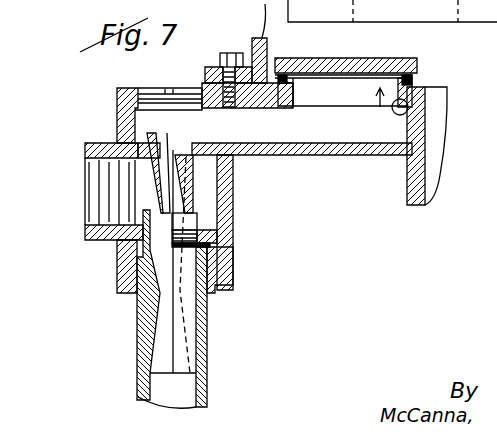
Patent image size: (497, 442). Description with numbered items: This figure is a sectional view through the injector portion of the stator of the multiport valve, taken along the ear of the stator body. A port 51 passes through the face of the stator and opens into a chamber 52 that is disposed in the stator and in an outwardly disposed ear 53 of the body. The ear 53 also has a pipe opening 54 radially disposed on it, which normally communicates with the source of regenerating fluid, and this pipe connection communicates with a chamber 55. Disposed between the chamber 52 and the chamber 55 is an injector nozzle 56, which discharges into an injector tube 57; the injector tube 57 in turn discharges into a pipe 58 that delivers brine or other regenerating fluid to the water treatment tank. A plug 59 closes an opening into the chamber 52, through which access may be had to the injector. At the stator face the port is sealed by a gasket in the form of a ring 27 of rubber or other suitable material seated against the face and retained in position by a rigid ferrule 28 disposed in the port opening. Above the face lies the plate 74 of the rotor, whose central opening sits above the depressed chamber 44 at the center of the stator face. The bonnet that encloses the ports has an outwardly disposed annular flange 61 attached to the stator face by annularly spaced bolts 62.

The ring 27 is at (412, 78).
The ferrule 28 is at (422, 115).
The depressed chamber 44 is at (430, 147).
The port 51 is at (350, 107).
The chamber 52 is at (302, 137).
The ear 53 is at (97, 114).
The pipe opening 54 is at (100, 220).
The chamber 55 is at (200, 188).
The injector nozzle 56 is at (180, 188).
The injector tube 57 is at (178, 303).
The pipe 58 is at (205, 350).
The plug 59 is at (153, 95).
The annular flange 61 is at (210, 67).
The bolts 62 is at (232, 62).
The plate 74 is at (412, 68).